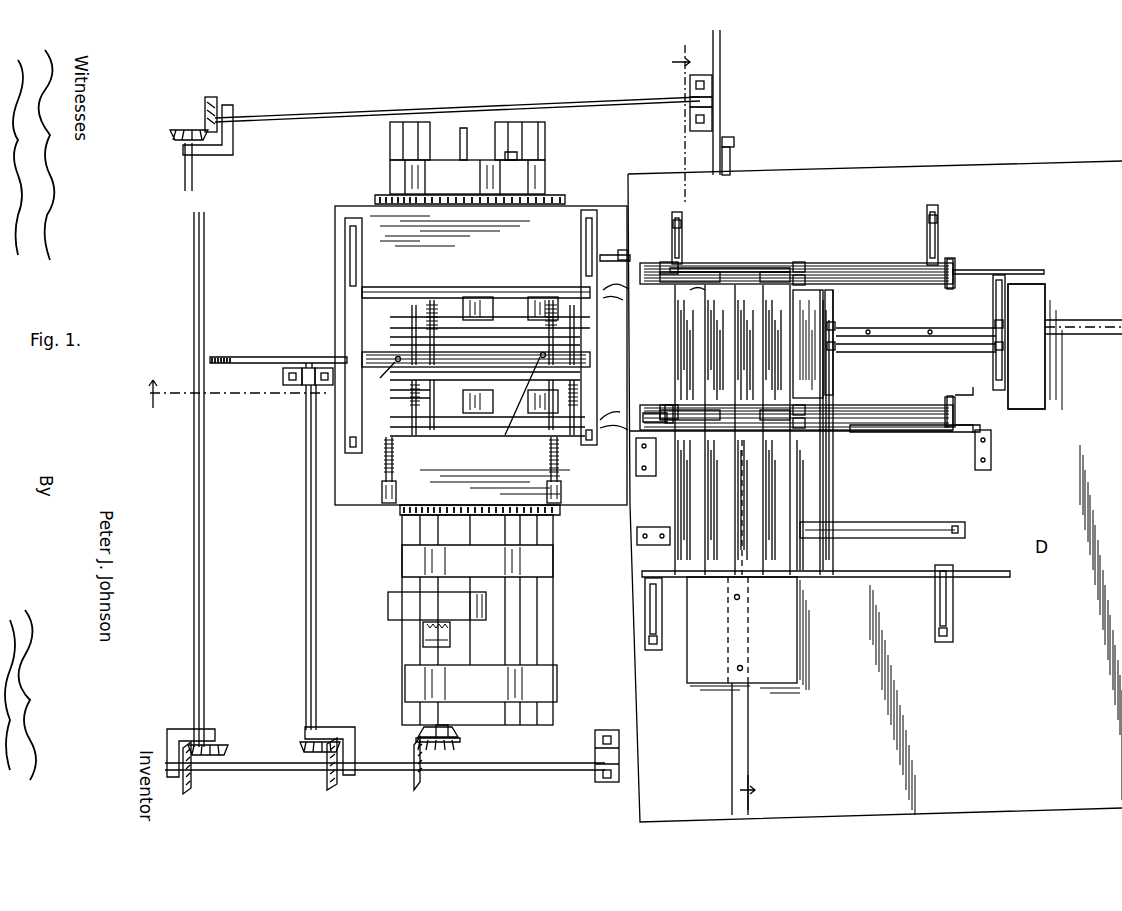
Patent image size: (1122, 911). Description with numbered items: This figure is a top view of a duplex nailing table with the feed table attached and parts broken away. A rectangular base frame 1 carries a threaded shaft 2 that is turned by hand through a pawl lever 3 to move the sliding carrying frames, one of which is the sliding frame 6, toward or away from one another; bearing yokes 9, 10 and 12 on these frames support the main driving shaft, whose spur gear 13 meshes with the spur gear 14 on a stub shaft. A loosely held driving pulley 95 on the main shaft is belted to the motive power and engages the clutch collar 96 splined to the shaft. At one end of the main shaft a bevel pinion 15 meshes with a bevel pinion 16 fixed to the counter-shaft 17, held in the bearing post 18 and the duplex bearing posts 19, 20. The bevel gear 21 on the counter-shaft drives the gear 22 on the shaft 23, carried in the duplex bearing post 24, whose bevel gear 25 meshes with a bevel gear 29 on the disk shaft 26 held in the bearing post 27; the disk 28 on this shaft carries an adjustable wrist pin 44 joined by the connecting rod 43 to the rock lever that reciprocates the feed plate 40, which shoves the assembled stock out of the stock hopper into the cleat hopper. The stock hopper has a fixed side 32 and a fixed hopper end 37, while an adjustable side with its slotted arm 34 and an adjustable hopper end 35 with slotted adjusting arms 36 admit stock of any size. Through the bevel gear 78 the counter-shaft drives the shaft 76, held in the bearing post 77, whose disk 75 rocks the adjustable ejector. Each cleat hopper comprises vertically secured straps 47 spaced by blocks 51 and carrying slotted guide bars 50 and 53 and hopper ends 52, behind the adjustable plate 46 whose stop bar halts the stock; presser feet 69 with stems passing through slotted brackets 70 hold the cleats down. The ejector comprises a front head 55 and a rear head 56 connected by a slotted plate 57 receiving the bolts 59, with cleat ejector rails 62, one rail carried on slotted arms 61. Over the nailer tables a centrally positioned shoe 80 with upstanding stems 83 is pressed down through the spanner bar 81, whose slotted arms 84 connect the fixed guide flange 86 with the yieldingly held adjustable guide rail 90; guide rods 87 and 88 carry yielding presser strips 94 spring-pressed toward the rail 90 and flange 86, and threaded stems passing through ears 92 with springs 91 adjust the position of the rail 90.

The rectangular base frame 1 is at (484, 135).
The threaded shaft 2 is at (474, 302).
The pawl lever 3 is at (228, 395).
The sliding carrying frame 6 is at (713, 425).
The bearing yoke 9 is at (477, 620).
The bearing yoke 10 is at (481, 695).
The bearing yoke 12 is at (467, 177).
The spur gear 13 is at (458, 192).
The spur gear 14 is at (576, 183).
The bevel pinion 15 is at (445, 755).
The bevel pinion 16 is at (414, 785).
The counter-shaft 17 is at (525, 771).
The bearing post 18 is at (607, 730).
The duplex bearing post 19 is at (172, 729).
The duplex bearing post 20 is at (341, 727).
The bevel gear 21 is at (192, 791).
The bevel gear 22 is at (226, 745).
The shaft 23 is at (193, 447).
The duplex bearing post 24 is at (234, 150).
The bevel gear 25 is at (186, 128).
The disk shaft 26 is at (342, 110).
The bearing post 27 is at (690, 96).
The disk 28 is at (722, 63).
The bevel gear 29 is at (214, 97).
The outer fixed side 32 is at (656, 517).
The slotted arm 34 is at (882, 516).
The adjustable hopper end 35 is at (862, 578).
The slotted adjusting arms 36 is at (645, 620).
The hopper end 37 is at (908, 432).
The feed plate 40 is at (748, 635).
The connecting rod 43 is at (732, 160).
The wrist pin 44 is at (735, 141).
The adjustable plate 46 is at (868, 264).
The straps 47 is at (955, 262).
The slotted guide bar 50 is at (755, 268).
The spacing blocks 51 is at (982, 270).
The hopper ends 52 is at (690, 278).
The slotted guide bar 53 is at (742, 258).
The front head 55 is at (808, 344).
The rear head 56 is at (1045, 370).
The slotted plate 57 is at (893, 346).
The bolts 59 is at (928, 328).
The slotted arms 61 is at (833, 370).
The cleat ejector rails 62 is at (1018, 270).
The presser feet 69 is at (638, 295).
The slotted bracket 70 is at (656, 405).
The disk 75 is at (237, 357).
The shaft 76 is at (306, 447).
The bearing post 77 is at (288, 375).
The bevel gear 78 is at (328, 784).
The shoe 80 is at (468, 340).
The spanner bar 81 is at (575, 355).
The upstanding stems 83 is at (454, 405).
The slotted arms 84 is at (581, 231).
The fixed guide flange 86 is at (445, 287).
The guide rods 87 is at (414, 314).
The guide rods 88 is at (487, 366).
The adjustable guide rail 90 is at (445, 440).
The springs 91 is at (386, 484).
The ears 92 is at (380, 493).
The yielding presser strip 94 is at (390, 290).
The driving pulley 95 is at (437, 606).
The clutch collar 96 is at (423, 637).